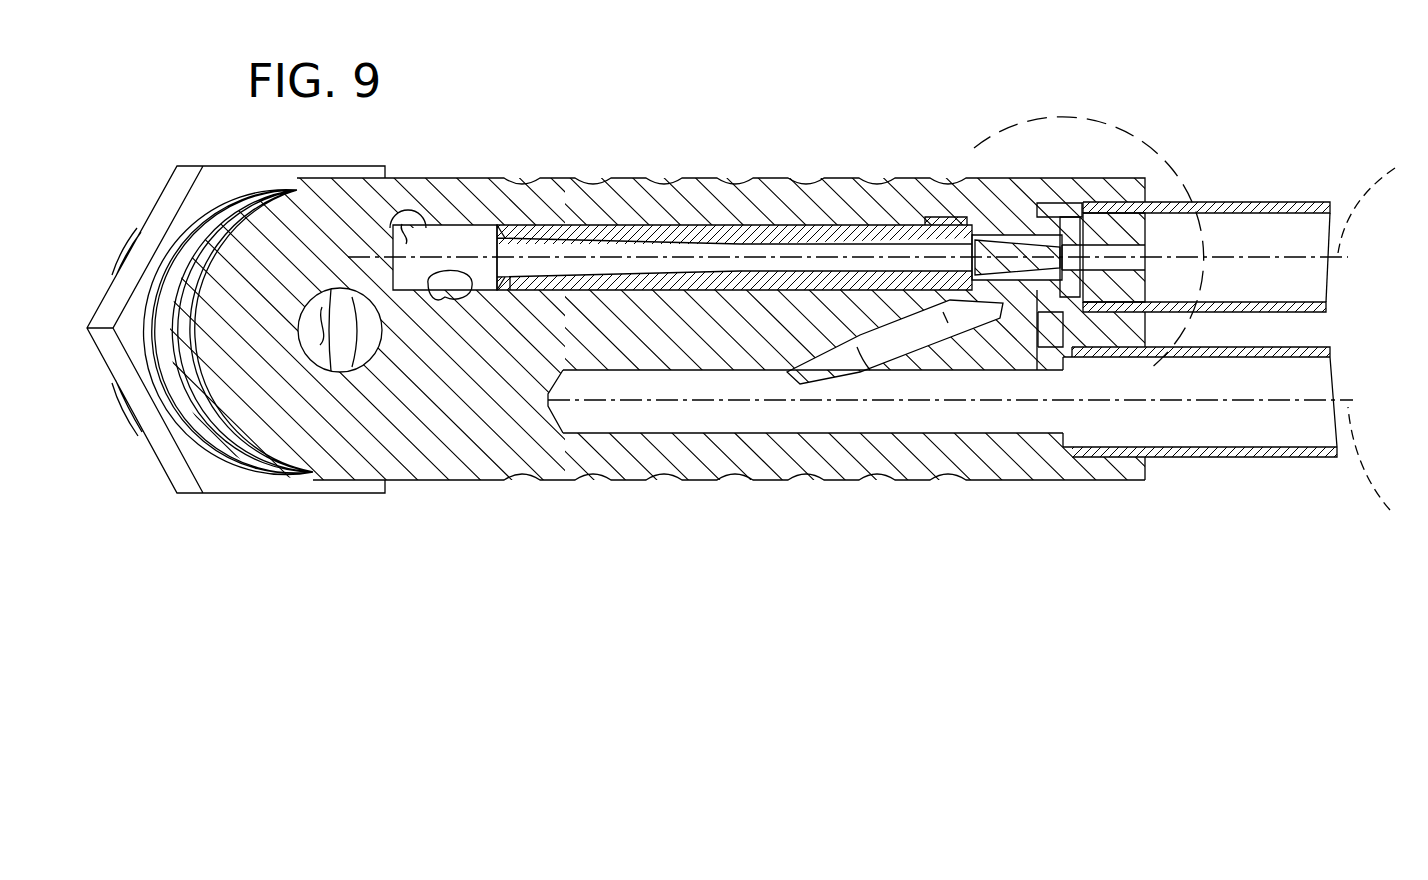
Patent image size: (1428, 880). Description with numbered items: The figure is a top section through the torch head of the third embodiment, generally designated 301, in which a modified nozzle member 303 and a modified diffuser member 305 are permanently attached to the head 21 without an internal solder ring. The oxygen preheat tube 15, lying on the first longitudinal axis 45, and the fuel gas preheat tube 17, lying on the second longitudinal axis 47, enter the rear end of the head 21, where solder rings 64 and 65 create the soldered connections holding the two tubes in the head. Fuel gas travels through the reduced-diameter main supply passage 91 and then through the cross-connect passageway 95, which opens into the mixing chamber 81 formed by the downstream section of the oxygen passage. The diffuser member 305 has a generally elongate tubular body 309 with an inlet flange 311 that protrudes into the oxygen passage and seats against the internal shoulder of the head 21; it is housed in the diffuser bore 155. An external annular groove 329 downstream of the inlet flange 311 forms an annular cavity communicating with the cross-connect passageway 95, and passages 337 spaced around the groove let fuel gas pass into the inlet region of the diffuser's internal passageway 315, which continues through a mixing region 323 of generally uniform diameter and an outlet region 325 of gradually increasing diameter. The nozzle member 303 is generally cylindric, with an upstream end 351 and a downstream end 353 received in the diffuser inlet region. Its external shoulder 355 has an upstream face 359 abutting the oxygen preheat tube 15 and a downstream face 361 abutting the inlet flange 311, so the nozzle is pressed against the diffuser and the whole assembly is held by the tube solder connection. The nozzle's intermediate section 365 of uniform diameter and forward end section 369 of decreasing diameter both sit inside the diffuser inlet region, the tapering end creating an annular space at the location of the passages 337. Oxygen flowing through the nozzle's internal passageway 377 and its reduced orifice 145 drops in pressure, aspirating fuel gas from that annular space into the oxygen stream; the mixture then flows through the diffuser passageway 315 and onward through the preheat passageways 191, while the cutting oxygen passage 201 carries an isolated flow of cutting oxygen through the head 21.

The oxygen preheat tube 15 is at (1302, 202).
The fuel gas preheat tube 17 is at (1293, 457).
The head 21 is at (487, 480).
The first longitudinal axis 45 is at (1380, 199).
The second longitudinal axis 47 is at (1380, 472).
The solder ring 64 is at (1147, 199).
The solder ring 65 is at (1147, 460).
The mixing chamber 81 is at (945, 215).
The main supply passage 91 is at (884, 480).
The cross-connect passageway 95 is at (860, 355).
The orifice 145 is at (1022, 215).
The diffuser bore 155 is at (435, 220).
The preheat passageways 191 is at (303, 193).
The cutting oxygen passage 201 is at (298, 332).
The torch head of third embodiment 301 is at (656, 173).
The nozzle member 303 is at (1190, 203).
The diffuser member 305 is at (471, 230).
The tubular body 309 is at (870, 235).
The inlet flange 311 is at (1065, 205).
The internal passageway 315 is at (767, 240).
The mixing region 323 is at (850, 228).
The outlet region 325 is at (515, 285).
The external annular groove 329 is at (983, 220).
The passages 337 is at (1020, 205).
The upstream end 351 is at (1090, 252).
The downstream end 353 is at (935, 300).
The external shoulder 355 is at (1092, 215).
The upstream face 359 is at (1120, 357).
The downstream face 361 is at (1042, 320).
The intermediate section 365 is at (1040, 203).
The forward end section 369 is at (1067, 372).
The internal passageway 377 is at (1132, 188).